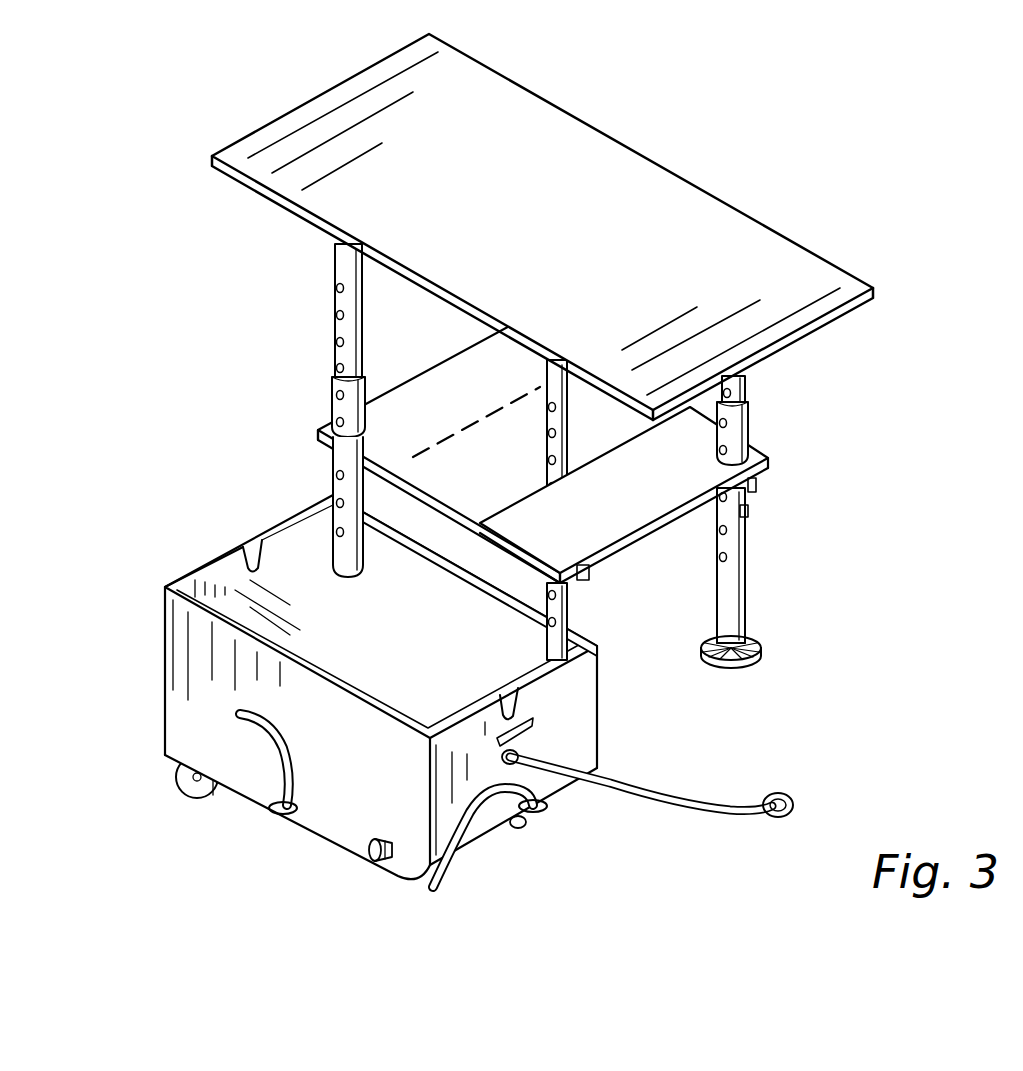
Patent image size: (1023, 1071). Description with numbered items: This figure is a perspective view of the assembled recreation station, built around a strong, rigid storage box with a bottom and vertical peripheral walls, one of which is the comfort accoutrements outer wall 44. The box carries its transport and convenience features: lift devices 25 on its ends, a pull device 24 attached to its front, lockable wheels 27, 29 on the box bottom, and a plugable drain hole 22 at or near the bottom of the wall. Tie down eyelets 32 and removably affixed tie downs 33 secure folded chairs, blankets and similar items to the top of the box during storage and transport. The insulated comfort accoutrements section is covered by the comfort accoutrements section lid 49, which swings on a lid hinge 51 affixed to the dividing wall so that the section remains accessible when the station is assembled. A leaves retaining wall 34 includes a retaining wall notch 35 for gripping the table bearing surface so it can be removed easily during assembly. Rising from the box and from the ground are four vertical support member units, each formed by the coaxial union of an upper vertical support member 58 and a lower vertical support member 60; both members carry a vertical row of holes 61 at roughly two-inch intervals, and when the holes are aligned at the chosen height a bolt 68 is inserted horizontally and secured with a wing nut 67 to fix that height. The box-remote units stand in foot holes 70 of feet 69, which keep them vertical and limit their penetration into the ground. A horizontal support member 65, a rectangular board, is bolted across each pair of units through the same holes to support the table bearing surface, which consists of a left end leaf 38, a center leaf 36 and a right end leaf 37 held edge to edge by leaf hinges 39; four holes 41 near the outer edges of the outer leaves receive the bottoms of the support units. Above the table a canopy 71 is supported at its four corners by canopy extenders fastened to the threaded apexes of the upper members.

The canopy 71 is at (770, 253).
The upper vertical support member 58 is at (745, 385).
The left end leaf 38 is at (490, 472).
The center leaf 36 is at (515, 515).
The leaf hinge 39 is at (420, 455).
The lower vertical support member 60 is at (338, 393).
The holes 41 is at (330, 432).
The comfort accoutrements section lid 49 is at (285, 583).
The leaves retaining wall 34 is at (322, 528).
The retaining wall notch 35 is at (250, 550).
The right end leaf 37 is at (752, 470).
The horizontal support member 65 is at (592, 572).
The wing nut 67 is at (742, 512).
The holes 61 is at (738, 556).
The bolt 68 is at (548, 570).
The foot holes 70 is at (715, 640).
The feet 69 is at (755, 640).
The lid hinge 51 is at (505, 665).
The comfort accoutrements outer wall 44 is at (168, 740).
The tie downs 33 is at (265, 730).
The lift devices 25 is at (530, 735).
The lockable wheel 29 is at (185, 783).
The tie down eyelets 32 is at (265, 806).
The plugable drain hole 22 is at (390, 840).
The pull device 24 is at (714, 800).
The lockable wheel 27 is at (520, 828).